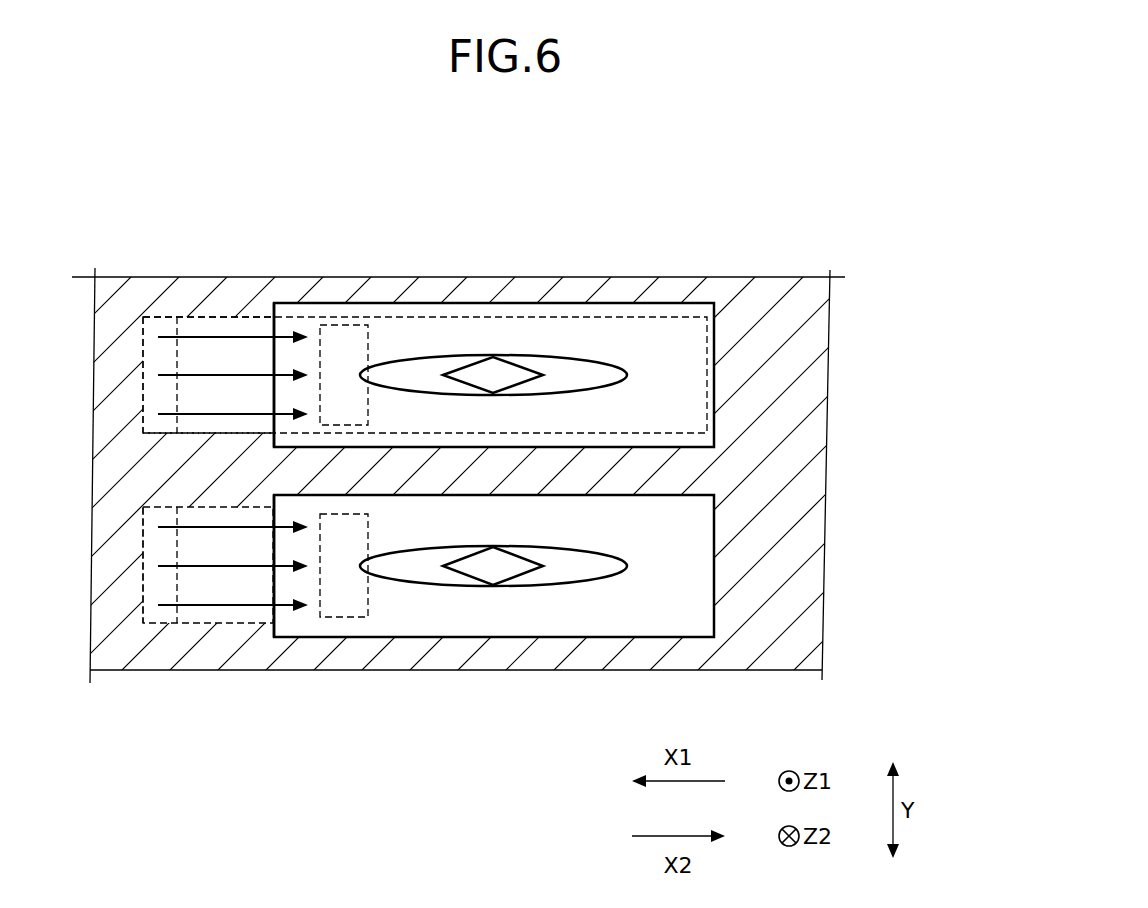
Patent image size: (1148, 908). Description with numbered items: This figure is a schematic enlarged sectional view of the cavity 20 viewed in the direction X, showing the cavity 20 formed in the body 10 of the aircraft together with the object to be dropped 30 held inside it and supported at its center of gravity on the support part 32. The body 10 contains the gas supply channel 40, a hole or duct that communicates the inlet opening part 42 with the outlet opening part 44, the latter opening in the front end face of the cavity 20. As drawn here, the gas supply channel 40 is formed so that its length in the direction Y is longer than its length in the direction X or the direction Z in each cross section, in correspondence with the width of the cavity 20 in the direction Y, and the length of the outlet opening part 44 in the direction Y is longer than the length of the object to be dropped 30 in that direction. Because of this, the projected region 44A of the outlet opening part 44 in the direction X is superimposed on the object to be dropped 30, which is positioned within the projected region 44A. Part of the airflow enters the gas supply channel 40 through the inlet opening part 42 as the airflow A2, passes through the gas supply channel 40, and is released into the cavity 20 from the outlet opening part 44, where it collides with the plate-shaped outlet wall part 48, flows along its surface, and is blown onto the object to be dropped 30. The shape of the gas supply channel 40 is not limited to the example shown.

The body 10 is at (775, 325).
The cavity 20 is at (677, 533).
The object to be dropped 30 is at (607, 552).
The support part 32 is at (505, 555).
The gas supply channel 40 is at (212, 317).
The inlet opening part 42 is at (157, 313).
The outlet opening part 44 is at (343, 325).
The projected region 44A is at (703, 435).
The outlet wall part 48 is at (275, 397).
The airflow A2 is at (245, 413).